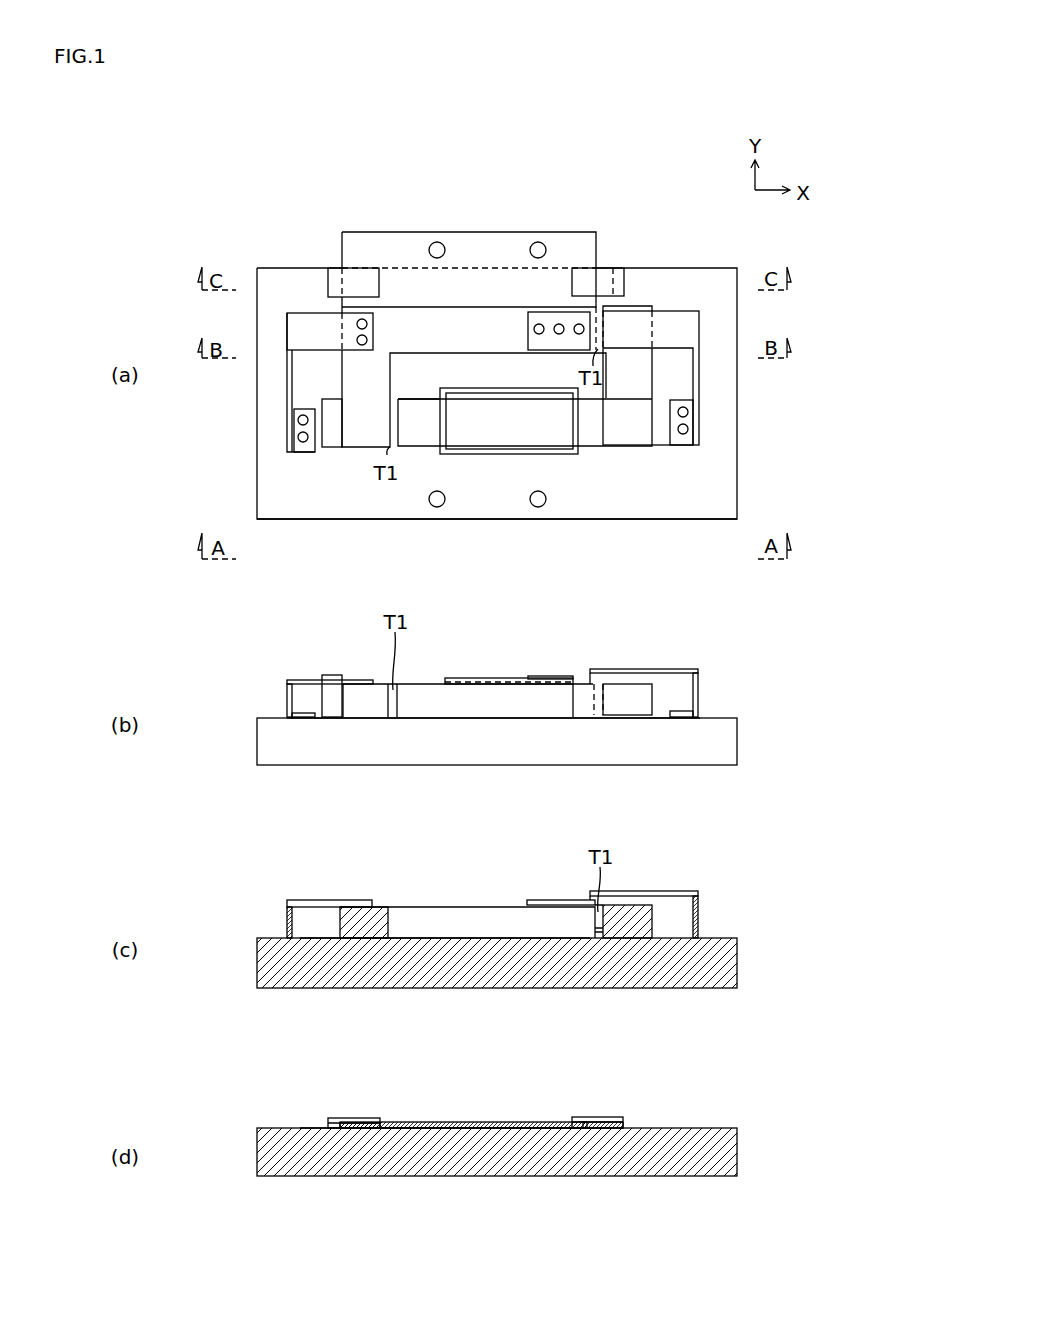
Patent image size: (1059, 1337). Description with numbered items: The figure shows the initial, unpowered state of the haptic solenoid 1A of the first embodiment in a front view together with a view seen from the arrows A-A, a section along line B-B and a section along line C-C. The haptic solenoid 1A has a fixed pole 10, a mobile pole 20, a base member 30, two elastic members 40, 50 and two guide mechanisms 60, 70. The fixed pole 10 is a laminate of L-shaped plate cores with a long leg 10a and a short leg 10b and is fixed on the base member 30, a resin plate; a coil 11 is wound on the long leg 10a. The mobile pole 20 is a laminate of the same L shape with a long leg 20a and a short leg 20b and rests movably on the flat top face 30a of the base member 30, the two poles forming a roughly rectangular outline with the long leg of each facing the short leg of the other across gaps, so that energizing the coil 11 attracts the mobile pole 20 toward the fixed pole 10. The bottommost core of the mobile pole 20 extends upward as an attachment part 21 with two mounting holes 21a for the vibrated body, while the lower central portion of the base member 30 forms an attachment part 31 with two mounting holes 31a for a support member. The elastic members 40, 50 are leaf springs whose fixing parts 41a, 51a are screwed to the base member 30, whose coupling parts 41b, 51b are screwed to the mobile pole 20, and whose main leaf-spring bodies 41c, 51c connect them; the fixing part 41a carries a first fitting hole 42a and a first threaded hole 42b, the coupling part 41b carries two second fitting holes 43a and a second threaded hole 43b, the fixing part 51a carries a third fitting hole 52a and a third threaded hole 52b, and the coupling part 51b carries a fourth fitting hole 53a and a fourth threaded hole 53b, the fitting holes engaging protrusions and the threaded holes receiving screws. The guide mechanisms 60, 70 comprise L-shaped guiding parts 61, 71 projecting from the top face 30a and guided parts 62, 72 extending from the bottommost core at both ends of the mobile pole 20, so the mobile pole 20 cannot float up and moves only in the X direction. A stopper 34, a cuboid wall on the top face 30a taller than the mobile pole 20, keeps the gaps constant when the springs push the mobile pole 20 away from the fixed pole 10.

The haptic solenoid 1A is at (690, 197).
The fixed pole 10 is at (635, 459).
The long leg 10a is at (413, 418).
The short leg 10b is at (628, 373).
The coil 11 is at (498, 427).
The mobile pole 20 is at (328, 384).
The long leg 20a is at (483, 330).
The short leg 20b is at (363, 417).
The attachment part 21 is at (455, 245).
The mounting holes 21a is at (437, 242).
The base member 30 is at (744, 503).
The top face 30a is at (737, 718).
The attachment part 31 is at (477, 500).
The mounting holes 31a is at (437, 507).
The stopper 34 is at (330, 425).
The elastic member 40 is at (714, 332).
The fixing part 41a is at (686, 445).
The coupling part 41b is at (550, 322).
The main leaf-spring body 41c is at (700, 390).
The first fitting hole 42a is at (688, 413).
The first threaded hole 42b is at (688, 430).
The second fitting holes 43a is at (536, 323).
The second threaded hole 43b is at (558, 322).
The elastic member 50 is at (281, 362).
The fixing part 51a is at (300, 453).
The coupling part 51b is at (369, 330).
The main leaf-spring body 51c is at (290, 401).
The third fitting hole 52a is at (298, 420).
The third threaded hole 52b is at (298, 437).
The fourth fitting hole 53a is at (357, 338).
The fourth threaded hole 53b is at (356, 322).
The guide mechanism 60 is at (325, 1110).
The guiding part 61 is at (350, 1122).
The guided part 62 is at (352, 262).
The guide mechanism 70 is at (618, 1104).
The guiding part 71 is at (588, 283).
The guided part 72 is at (590, 263).